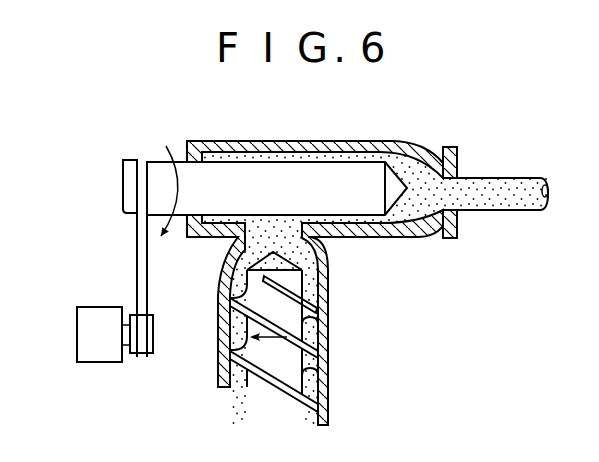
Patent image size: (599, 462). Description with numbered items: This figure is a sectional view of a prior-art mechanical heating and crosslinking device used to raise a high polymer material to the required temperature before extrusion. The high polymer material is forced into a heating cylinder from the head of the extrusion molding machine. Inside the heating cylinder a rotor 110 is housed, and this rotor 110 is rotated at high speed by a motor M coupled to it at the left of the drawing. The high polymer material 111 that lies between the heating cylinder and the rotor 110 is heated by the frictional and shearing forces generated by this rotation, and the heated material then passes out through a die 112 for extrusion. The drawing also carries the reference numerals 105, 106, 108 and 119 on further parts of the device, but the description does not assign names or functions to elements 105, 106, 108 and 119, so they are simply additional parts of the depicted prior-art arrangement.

The screw conveyor casing 105 is at (329, 309).
The screw conveyor 106 is at (290, 381).
The discharge tube 108 is at (519, 207).
The rotor 110 is at (237, 180).
The high polymer material 111 is at (297, 153).
The die 112 is at (458, 163).
The housing 119 is at (355, 147).
The motor M is at (80, 326).